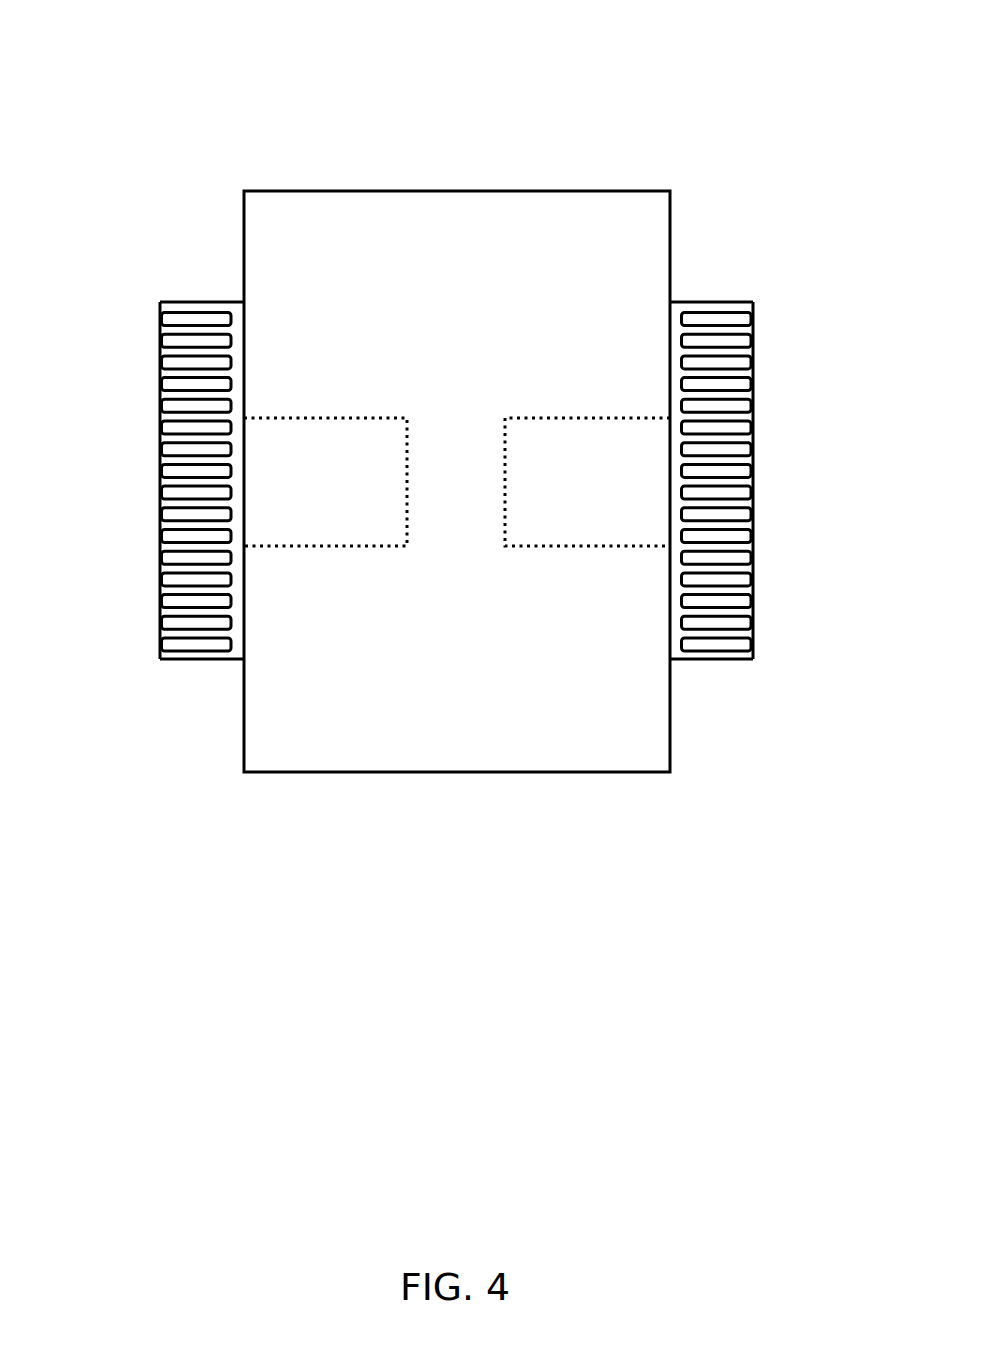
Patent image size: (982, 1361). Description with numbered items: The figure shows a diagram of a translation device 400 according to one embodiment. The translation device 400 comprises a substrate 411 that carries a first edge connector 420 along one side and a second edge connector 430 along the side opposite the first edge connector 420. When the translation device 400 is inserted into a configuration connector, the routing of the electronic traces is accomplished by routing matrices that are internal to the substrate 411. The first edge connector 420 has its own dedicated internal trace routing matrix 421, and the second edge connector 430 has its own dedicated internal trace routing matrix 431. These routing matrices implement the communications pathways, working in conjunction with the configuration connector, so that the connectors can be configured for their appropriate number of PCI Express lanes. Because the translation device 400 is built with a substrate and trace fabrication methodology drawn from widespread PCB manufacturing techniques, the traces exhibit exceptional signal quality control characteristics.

The translation device 400 is at (422, 48).
The substrate 411 is at (340, 191).
The first edge connector 420 is at (136, 303).
The second edge connector 430 is at (772, 303).
The internal trace routing matrix 421 is at (325, 547).
The internal trace routing matrix 431 is at (586, 548).